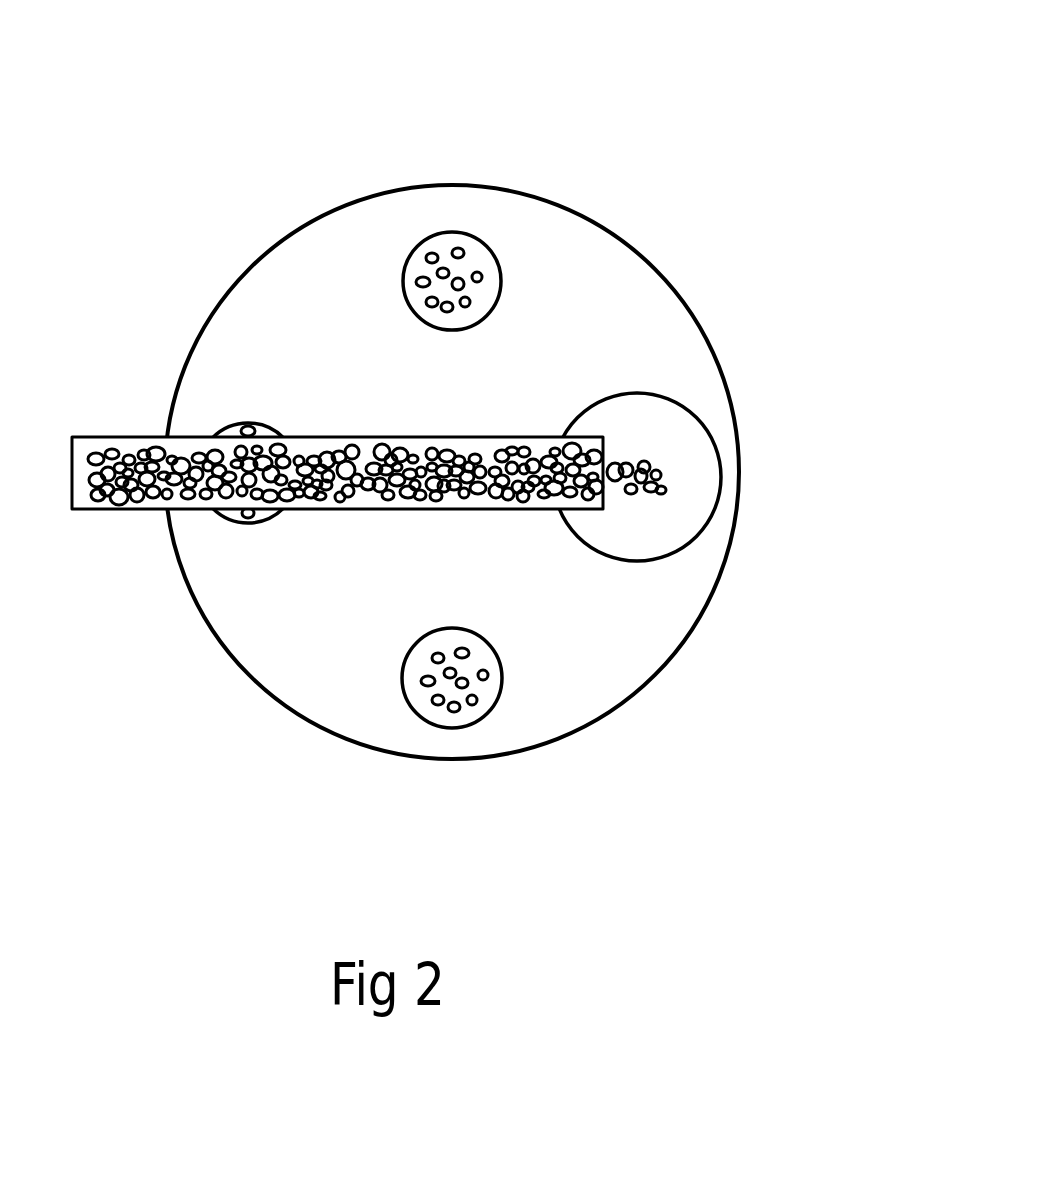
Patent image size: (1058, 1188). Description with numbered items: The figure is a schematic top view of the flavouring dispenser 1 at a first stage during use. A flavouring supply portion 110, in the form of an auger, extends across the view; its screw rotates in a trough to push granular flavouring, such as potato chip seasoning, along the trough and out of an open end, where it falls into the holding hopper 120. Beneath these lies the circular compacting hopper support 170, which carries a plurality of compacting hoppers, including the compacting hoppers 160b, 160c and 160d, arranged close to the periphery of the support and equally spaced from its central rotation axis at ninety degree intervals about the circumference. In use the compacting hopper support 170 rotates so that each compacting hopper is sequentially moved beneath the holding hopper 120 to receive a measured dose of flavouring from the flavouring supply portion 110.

The flavouring dispenser 1 is at (211, 167).
The flavouring supply portion 110 is at (380, 510).
The holding hopper 120 is at (697, 413).
The second compacting hopper 160b is at (459, 728).
The third compacting hopper 160c is at (235, 525).
The fourth compacting hopper 160d is at (460, 230).
The compacting hopper support 170 is at (605, 282).